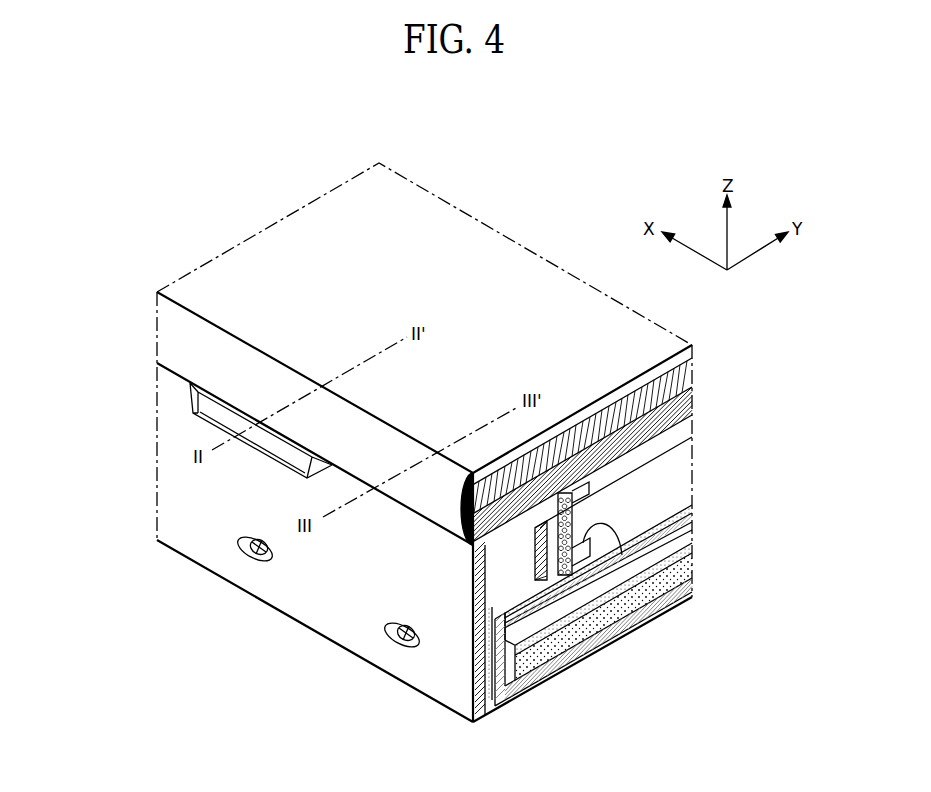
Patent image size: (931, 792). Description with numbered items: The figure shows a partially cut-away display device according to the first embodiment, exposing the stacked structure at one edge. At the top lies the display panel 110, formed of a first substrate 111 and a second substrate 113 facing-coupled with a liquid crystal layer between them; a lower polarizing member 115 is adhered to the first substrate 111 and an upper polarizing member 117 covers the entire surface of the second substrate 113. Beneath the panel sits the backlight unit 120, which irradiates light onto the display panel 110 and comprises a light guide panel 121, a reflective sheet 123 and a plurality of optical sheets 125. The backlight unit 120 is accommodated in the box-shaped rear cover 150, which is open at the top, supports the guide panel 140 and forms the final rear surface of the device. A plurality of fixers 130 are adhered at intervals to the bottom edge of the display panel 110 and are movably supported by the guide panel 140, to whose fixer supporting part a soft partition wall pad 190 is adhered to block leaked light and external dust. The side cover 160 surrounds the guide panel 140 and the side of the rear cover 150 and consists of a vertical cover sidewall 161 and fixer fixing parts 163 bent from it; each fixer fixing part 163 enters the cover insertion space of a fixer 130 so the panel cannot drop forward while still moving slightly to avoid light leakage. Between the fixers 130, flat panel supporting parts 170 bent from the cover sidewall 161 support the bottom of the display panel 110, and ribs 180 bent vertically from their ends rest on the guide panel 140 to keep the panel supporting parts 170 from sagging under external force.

The display panel 110 is at (800, 320).
The first substrate 111 is at (692, 378).
The second substrate 113 is at (692, 403).
The lower polarizing member 115 is at (692, 428).
The upper polarizing member 117 is at (692, 352).
The backlight unit 120 is at (788, 470).
The light guide panel 121 is at (692, 550).
The reflective sheet 123 is at (692, 578).
The optical sheets 125 is at (692, 528).
The fixers 130 is at (197, 404).
The guide panel 140 is at (603, 532).
The rear cover 150 is at (555, 678).
The side cover 160 is at (297, 737).
The cover sidewall 161 is at (263, 572).
The fixer fixing parts 163 is at (258, 441).
The panel supporting parts 170 is at (532, 580).
The ribs 180 is at (532, 557).
The partition wall pad 190 is at (622, 555).